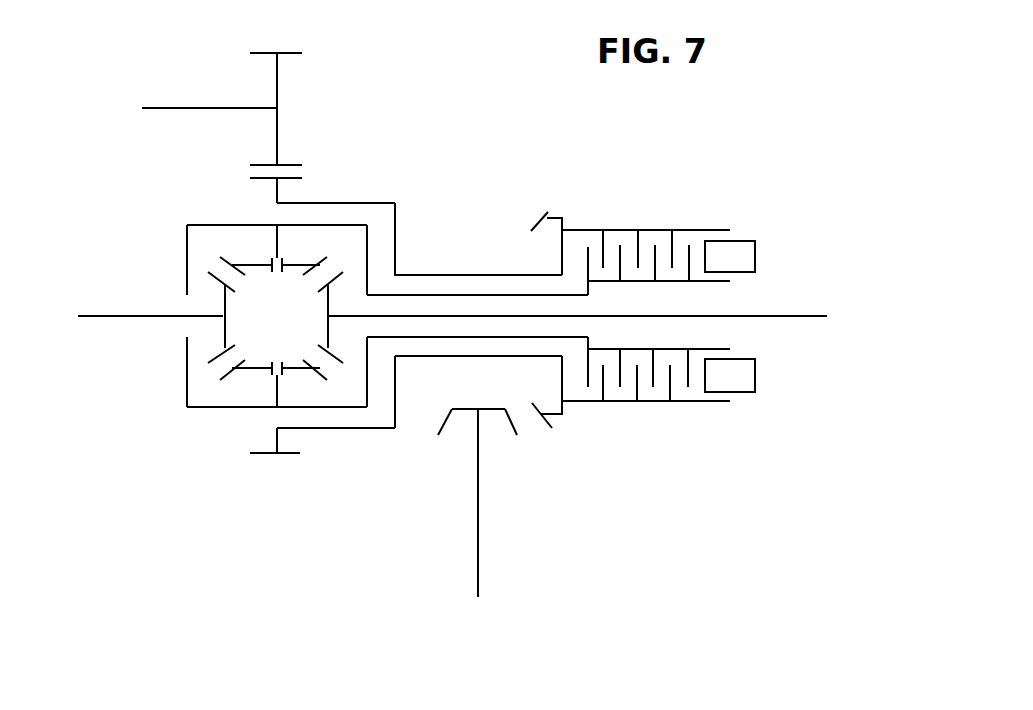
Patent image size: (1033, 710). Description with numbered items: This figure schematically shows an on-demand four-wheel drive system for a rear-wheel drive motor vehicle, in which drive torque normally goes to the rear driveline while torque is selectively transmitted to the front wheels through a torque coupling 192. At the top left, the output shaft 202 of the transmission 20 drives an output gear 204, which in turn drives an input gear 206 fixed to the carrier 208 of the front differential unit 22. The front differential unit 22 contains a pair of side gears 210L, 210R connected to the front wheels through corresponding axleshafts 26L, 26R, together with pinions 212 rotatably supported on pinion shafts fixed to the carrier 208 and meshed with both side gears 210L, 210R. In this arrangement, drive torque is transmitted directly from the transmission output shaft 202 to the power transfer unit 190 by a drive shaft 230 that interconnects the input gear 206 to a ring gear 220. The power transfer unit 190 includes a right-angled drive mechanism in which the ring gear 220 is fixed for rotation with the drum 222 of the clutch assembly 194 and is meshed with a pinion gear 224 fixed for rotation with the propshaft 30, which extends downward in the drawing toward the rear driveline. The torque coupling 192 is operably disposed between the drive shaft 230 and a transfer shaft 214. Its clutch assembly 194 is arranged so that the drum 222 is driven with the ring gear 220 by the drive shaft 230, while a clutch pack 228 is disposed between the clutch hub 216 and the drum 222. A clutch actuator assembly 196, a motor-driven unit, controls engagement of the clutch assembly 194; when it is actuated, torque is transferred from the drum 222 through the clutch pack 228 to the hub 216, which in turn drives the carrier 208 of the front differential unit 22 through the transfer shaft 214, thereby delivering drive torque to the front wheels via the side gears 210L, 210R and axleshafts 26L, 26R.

The transmission 20 is at (293, 93).
The front differential unit 22 is at (237, 343).
The axleshaft 26L is at (113, 315).
The axleshaft 26R is at (793, 316).
The propshaft 30 is at (478, 560).
The power transfer unit 190 is at (590, 463).
The torque coupling 192 is at (711, 208).
The clutch assembly 194 is at (692, 218).
The clutch actuator assembly 196 is at (737, 262).
The output shaft 202 is at (167, 108).
The output gear 204 is at (265, 53).
The input gear 206 is at (290, 457).
The carrier 208 is at (230, 225).
The side gear 210L is at (227, 302).
The side gear 210R is at (328, 332).
The pinions 212 is at (290, 263).
The transfer shaft 214 is at (425, 293).
The clutch hub 216 is at (637, 282).
The ring gear 220 is at (543, 212).
The drum 222 is at (653, 402).
The pinion gear 224 is at (473, 408).
The clutch pack 228 is at (640, 257).
The drive shaft 230 is at (485, 356).